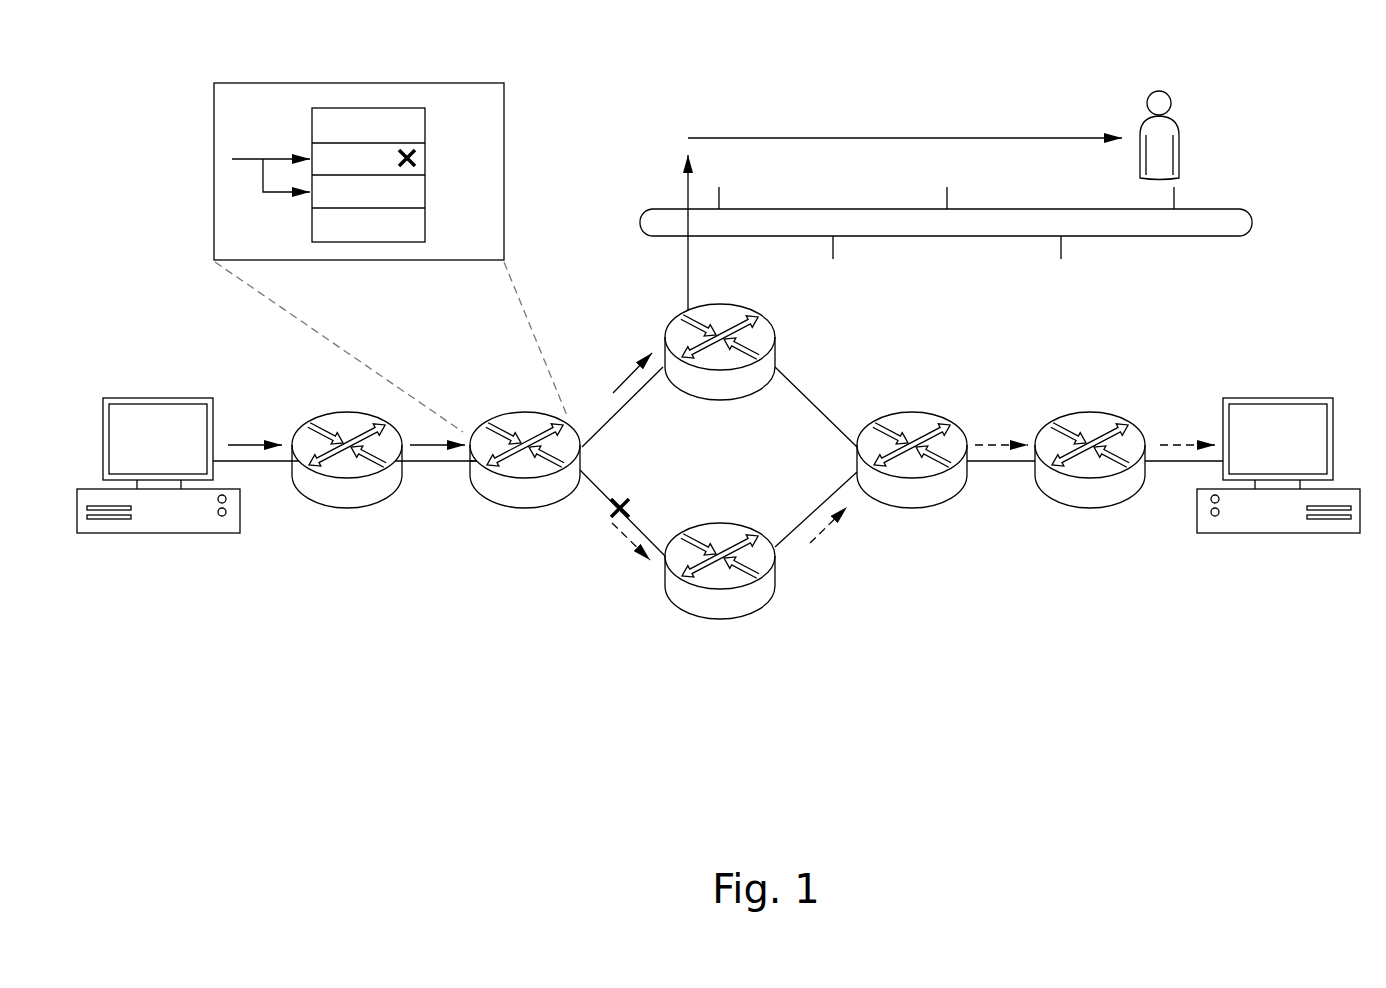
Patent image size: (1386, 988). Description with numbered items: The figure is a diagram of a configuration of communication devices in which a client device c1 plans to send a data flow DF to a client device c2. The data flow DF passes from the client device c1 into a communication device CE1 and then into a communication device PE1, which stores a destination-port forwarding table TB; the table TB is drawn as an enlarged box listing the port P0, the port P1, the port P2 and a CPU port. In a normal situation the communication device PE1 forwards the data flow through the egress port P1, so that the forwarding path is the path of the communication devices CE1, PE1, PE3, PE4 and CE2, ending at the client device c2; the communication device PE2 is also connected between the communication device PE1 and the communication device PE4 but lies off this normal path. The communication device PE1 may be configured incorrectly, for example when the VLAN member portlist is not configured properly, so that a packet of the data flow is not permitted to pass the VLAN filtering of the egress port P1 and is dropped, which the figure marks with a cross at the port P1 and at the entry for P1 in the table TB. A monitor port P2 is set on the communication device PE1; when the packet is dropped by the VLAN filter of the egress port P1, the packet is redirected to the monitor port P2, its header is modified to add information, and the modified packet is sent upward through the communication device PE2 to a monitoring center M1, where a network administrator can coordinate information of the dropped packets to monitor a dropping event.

The client device c1 is at (170, 533).
The client device c2 is at (1237, 533).
The communication device CE1 is at (347, 508).
The communication device CE2 is at (1090, 508).
The communication device PE1 is at (525, 508).
The communication device PE2 is at (720, 398).
The communication device PE3 is at (720, 618).
The communication device PE4 is at (912, 508).
The port P0 is at (456, 477).
The egress port P1 is at (619, 513).
The monitor port P2 is at (618, 407).
The data flow DF is at (247, 440).
The destination-port forwarding table TB is at (405, 108).
The monitoring center M1 is at (1172, 128).